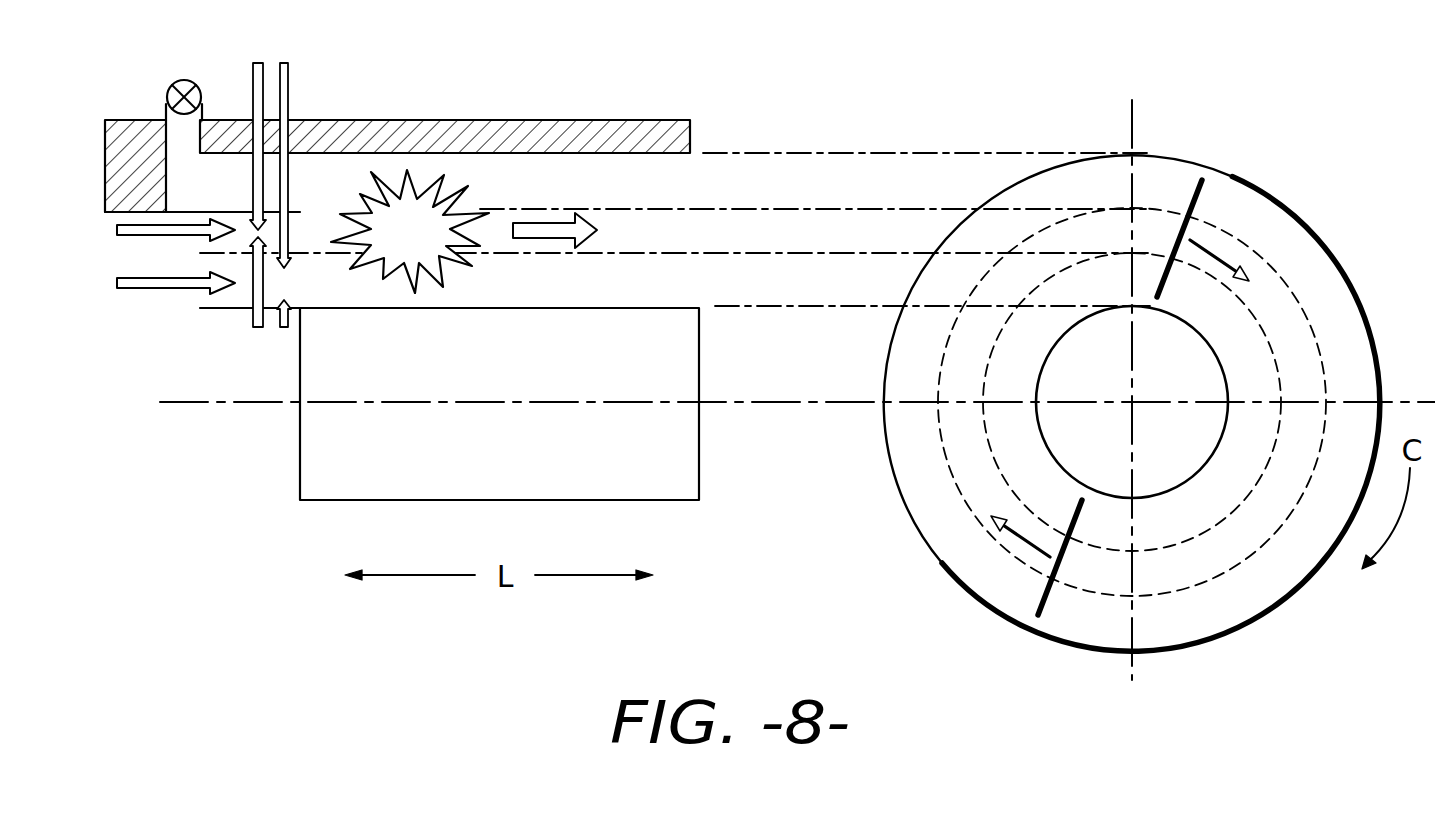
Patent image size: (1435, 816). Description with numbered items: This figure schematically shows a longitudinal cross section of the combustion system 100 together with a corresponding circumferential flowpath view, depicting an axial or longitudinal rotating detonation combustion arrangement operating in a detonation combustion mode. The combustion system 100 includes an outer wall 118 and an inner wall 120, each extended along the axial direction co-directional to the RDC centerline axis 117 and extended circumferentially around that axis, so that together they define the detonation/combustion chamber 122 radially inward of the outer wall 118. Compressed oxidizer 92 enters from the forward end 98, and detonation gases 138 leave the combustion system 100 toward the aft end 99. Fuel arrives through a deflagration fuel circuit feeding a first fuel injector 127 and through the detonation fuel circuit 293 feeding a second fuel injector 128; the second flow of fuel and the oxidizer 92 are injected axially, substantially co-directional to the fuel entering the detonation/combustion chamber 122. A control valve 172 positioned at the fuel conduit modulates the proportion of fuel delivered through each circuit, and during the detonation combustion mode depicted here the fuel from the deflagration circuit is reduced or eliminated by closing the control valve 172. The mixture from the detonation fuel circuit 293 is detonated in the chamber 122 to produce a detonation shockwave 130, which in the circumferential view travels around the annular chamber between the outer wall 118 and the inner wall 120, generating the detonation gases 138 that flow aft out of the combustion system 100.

The combustion system 100 is at (537, 78).
The control valve 172 is at (167, 97).
The detonation fuel circuit 293 is at (290, 70).
The first fuel injector 127 is at (316, 180).
The second fuel injector 128 is at (305, 233).
The detonation shockwave 130 is at (388, 246).
The outer wall 118 is at (618, 160).
The detonation gases 138 is at (550, 243).
The detonation/combustion chamber 122 is at (630, 246).
The aft end 99 is at (741, 246).
The inner wall 120 is at (648, 302).
The forward end 98 is at (57, 246).
The compressed oxidizer 92 is at (160, 293).
The RDC centerline axis 117 is at (196, 404).